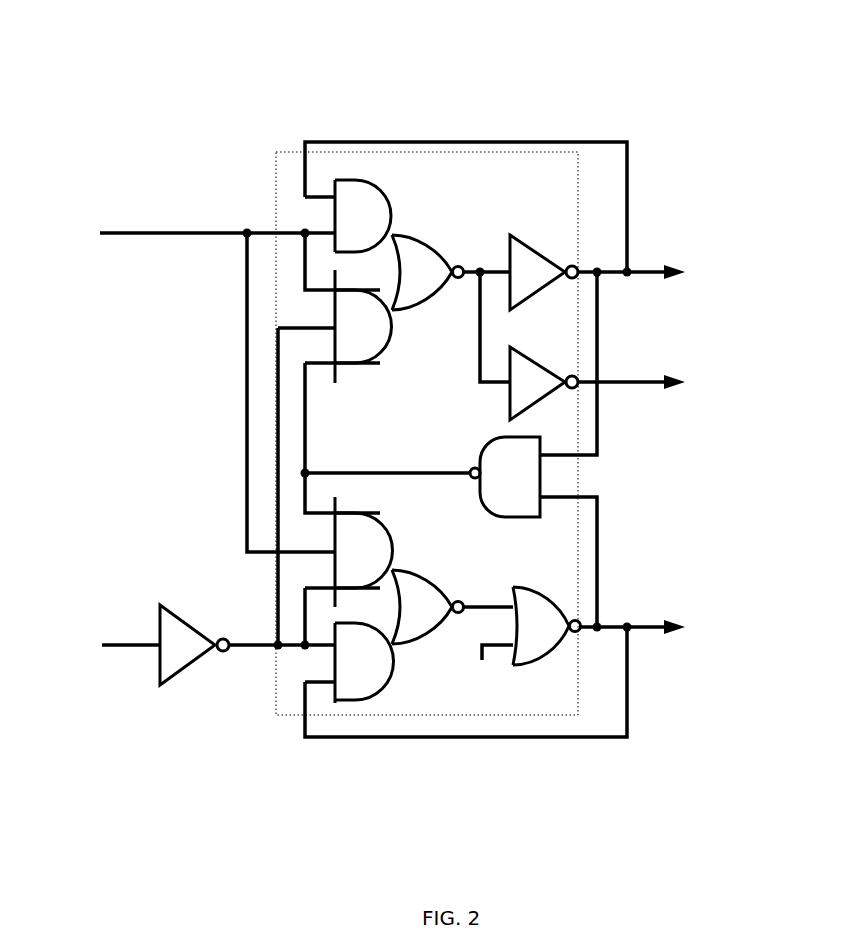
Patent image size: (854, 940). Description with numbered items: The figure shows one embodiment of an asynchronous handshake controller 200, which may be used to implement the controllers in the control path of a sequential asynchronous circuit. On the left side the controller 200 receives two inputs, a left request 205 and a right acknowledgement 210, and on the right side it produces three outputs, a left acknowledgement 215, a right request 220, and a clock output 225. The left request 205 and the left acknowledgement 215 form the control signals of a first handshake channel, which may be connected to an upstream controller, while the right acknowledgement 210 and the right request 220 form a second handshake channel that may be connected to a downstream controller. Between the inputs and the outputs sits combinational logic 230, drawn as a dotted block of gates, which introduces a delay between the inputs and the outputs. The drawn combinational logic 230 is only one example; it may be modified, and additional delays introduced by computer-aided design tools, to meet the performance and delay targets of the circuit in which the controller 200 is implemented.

The asynchronous handshake controller 200 is at (56, 20).
The left request 205 is at (173, 223).
The right acknowledgement 210 is at (130, 650).
The left acknowledgement 215 is at (655, 267).
The right request 220 is at (650, 630).
The clock output 225 is at (637, 390).
The combinational logic 230 is at (273, 182).